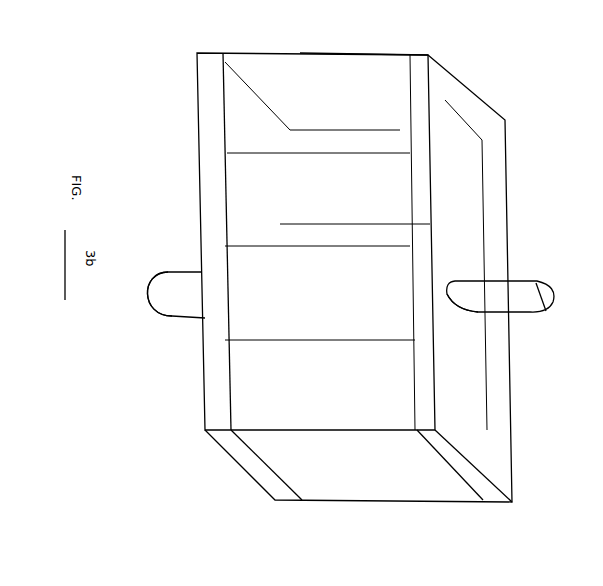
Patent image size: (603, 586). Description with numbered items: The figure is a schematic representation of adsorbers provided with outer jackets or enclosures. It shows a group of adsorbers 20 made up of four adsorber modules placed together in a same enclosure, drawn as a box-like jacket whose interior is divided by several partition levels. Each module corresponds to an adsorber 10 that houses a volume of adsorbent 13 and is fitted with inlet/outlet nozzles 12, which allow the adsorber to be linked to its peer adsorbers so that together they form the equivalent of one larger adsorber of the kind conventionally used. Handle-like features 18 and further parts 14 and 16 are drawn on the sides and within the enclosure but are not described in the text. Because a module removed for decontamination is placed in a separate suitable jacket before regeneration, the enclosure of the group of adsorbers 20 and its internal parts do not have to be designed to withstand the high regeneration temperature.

The adsorber 10 is at (147, 78).
The inlet/outlet nozzles 12 is at (245, 207).
The volume of adsorbent 13 is at (310, 78).
The shelf 14 is at (262, 280).
The lower shelf 16 is at (262, 380).
The handle 18 is at (162, 288).
The group of adsorbers 20 is at (342, 309).